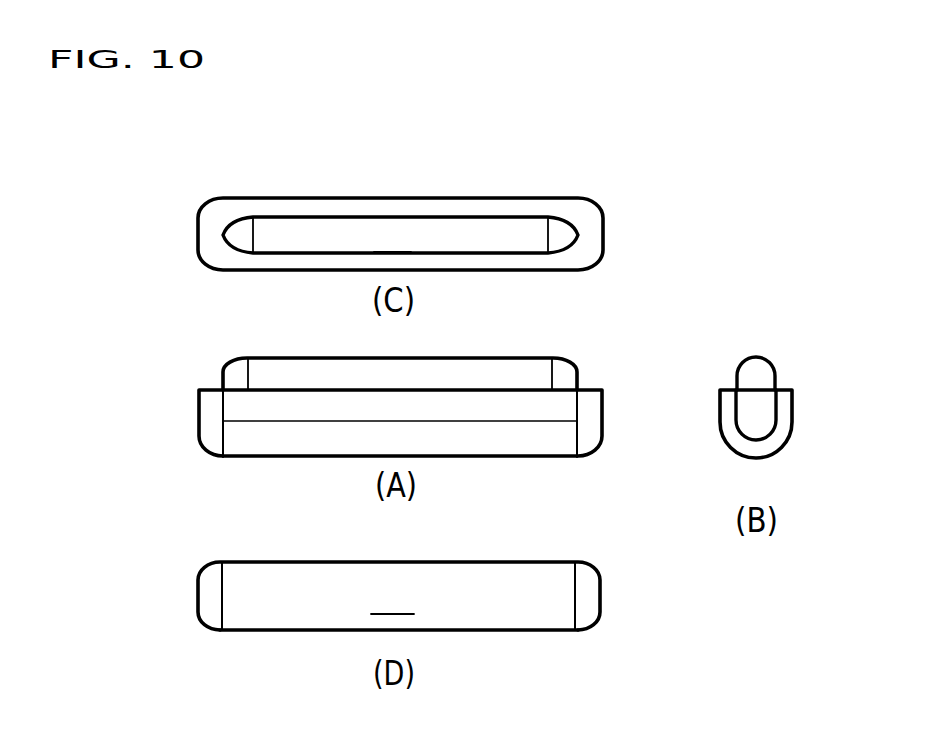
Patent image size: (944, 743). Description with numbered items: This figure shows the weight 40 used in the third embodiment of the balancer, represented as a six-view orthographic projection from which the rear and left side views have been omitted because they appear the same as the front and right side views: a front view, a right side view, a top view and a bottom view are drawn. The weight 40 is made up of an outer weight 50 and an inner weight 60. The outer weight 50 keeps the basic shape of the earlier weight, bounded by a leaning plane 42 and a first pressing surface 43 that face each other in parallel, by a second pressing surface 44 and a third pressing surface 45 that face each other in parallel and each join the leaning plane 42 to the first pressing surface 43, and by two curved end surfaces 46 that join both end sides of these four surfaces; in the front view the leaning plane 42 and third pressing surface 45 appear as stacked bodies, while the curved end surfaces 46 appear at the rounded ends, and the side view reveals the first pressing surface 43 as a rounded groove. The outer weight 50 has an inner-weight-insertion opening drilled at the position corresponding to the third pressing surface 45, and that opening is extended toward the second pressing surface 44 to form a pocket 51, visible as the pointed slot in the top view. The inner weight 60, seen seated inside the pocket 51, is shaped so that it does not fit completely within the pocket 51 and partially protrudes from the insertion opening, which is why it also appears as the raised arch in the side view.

The weight 40 is at (466, 180).
The leaning plane 42 is at (473, 408).
The first pressing surface 43 is at (793, 407).
The second pressing surface 44 is at (767, 457).
The third pressing surface 45 is at (422, 360).
The curved end surfaces 46 is at (212, 428).
The outer weight 50 is at (220, 215).
The pocket 51 is at (488, 260).
The inner weight 60 is at (400, 237).